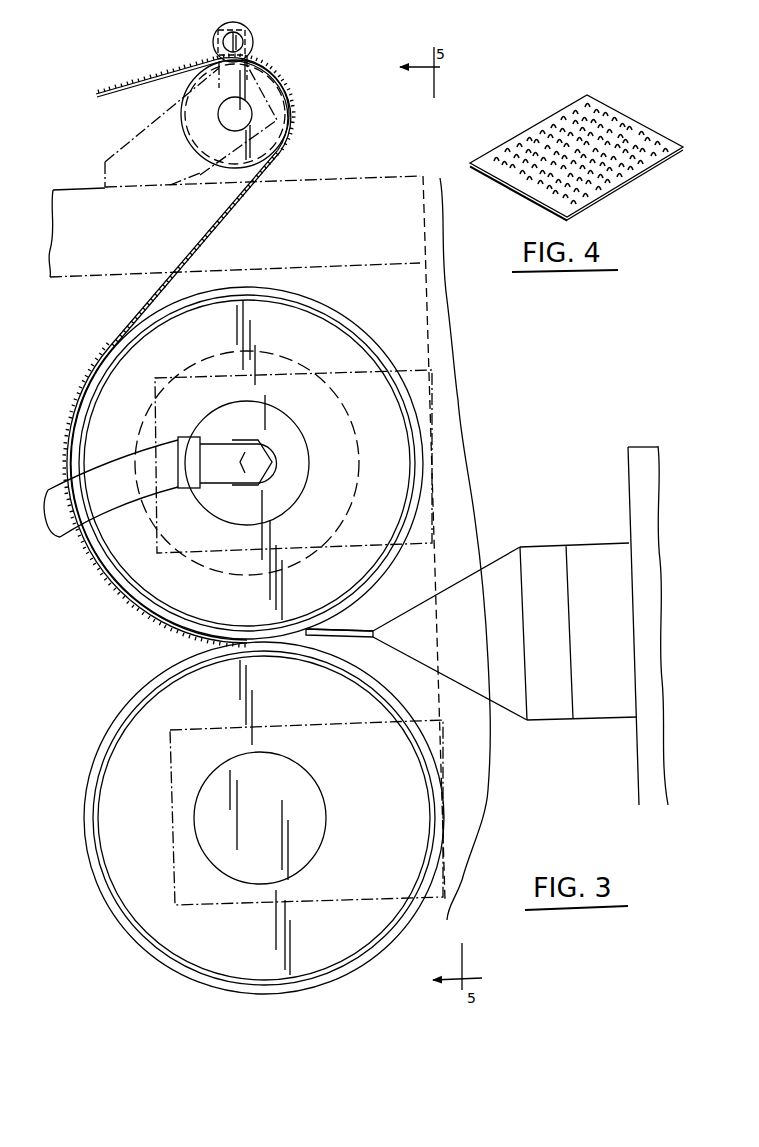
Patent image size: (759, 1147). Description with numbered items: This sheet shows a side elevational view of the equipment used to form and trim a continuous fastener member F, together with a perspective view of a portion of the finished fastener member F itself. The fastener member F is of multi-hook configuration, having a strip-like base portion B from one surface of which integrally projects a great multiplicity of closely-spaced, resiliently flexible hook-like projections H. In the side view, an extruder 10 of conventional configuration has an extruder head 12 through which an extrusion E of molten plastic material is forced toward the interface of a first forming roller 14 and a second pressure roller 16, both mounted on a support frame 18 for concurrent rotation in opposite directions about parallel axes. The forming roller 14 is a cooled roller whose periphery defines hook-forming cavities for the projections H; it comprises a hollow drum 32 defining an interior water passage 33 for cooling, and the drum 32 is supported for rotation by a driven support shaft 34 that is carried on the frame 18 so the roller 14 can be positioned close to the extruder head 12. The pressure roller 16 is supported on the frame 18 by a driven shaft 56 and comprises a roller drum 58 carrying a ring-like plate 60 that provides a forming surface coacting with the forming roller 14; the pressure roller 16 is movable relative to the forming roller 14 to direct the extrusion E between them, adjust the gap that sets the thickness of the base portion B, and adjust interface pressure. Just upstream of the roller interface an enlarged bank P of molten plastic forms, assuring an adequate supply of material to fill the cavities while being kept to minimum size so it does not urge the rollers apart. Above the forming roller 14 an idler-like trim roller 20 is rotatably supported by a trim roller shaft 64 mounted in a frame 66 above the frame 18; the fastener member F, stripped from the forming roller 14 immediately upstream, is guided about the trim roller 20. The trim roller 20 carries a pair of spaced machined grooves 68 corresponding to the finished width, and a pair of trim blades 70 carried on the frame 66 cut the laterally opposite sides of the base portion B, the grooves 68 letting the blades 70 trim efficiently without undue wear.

In FIG. 3, the extruder 10 is at (627, 447).
In FIG. 3, the extruder head 12 is at (507, 546).
In FIG. 3, the first forming roller 14 is at (251, 456).
In FIG. 3, the second pressure roller 16 is at (260, 813).
In FIG. 3, the support frame 18 is at (422, 297).
In FIG. 3, the trim roller 20 is at (220, 114).
In FIG. 3, the hollow drum 32 is at (375, 344).
In FIG. 3, the interior water passage 33 is at (288, 313).
In FIG. 3, the driven support shaft 34 is at (297, 428).
In FIG. 3, the driven shaft 56 is at (311, 781).
In FIG. 3, the roller drum 58 is at (125, 720).
In FIG. 3, the ring-like plate 60 is at (170, 662).
In FIG. 3, the trim roller shaft 64 is at (222, 110).
In FIG. 3, the frame 66 is at (158, 128).
In FIG. 3, the machined grooves 68 is at (183, 130).
In FIG. 3, the trim blades 70 is at (255, 45).
In FIG. 3, the fastener member F is at (207, 222).
In FIG. 4, the fastener member F is at (579, 163).
In FIG. 3, the extrusion E is at (372, 631).
In FIG. 3, the bank P is at (318, 629).
In FIG. 4, the hook-like projections H is at (515, 150).
In FIG. 4, the base portion B is at (587, 197).